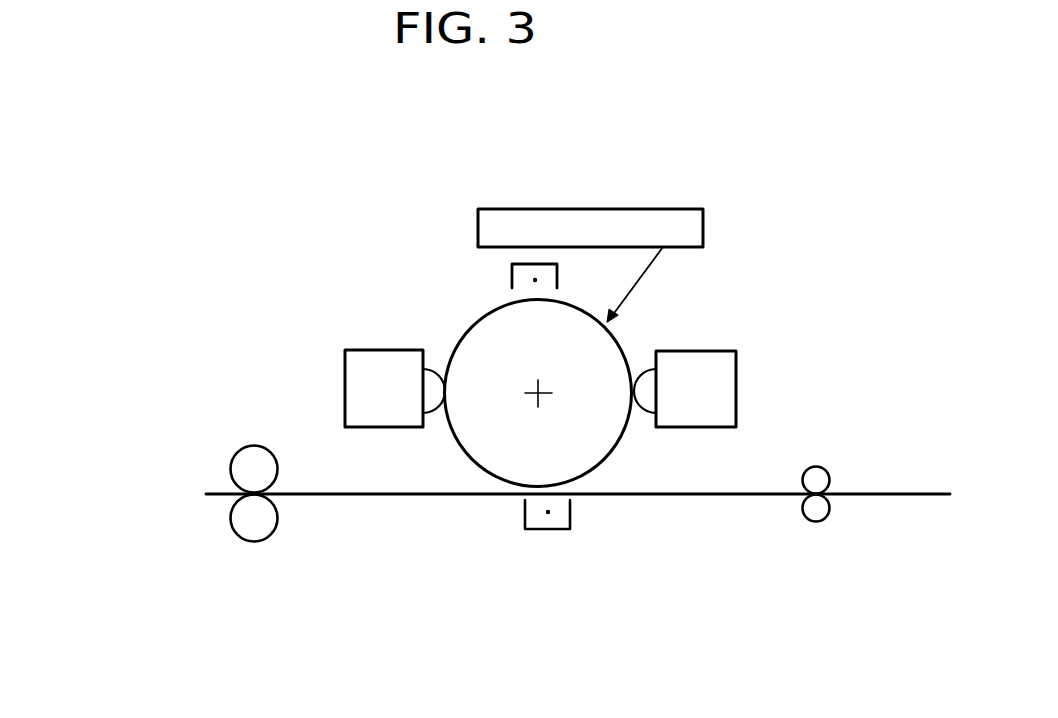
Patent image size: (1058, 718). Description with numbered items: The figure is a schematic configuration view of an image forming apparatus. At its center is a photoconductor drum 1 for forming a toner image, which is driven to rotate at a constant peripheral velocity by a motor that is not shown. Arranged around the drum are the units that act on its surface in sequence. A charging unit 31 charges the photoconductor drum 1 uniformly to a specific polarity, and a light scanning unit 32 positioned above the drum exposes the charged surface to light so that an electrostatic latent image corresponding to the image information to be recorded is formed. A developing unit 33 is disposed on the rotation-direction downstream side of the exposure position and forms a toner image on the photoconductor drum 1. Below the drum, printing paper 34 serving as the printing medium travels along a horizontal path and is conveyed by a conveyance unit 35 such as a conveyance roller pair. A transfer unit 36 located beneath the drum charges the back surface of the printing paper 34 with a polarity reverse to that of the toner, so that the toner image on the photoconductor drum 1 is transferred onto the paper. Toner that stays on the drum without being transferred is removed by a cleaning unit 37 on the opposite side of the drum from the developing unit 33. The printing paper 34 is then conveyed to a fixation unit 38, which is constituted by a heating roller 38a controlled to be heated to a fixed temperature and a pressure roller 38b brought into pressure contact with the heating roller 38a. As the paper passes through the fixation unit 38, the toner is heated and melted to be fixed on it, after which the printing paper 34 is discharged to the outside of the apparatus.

The photoconductor drum 1 is at (473, 326).
The charging unit 31 is at (512, 280).
The light scanning unit 32 is at (665, 209).
The developing unit 33 is at (697, 351).
The printing paper 34 is at (760, 494).
The conveyance unit 35 is at (810, 512).
The transfer unit 36 is at (545, 529).
The cleaning unit 37 is at (345, 385).
The fixation unit 38 is at (161, 487).
The heating roller 38a is at (230, 471).
The pressure roller 38b is at (231, 530).